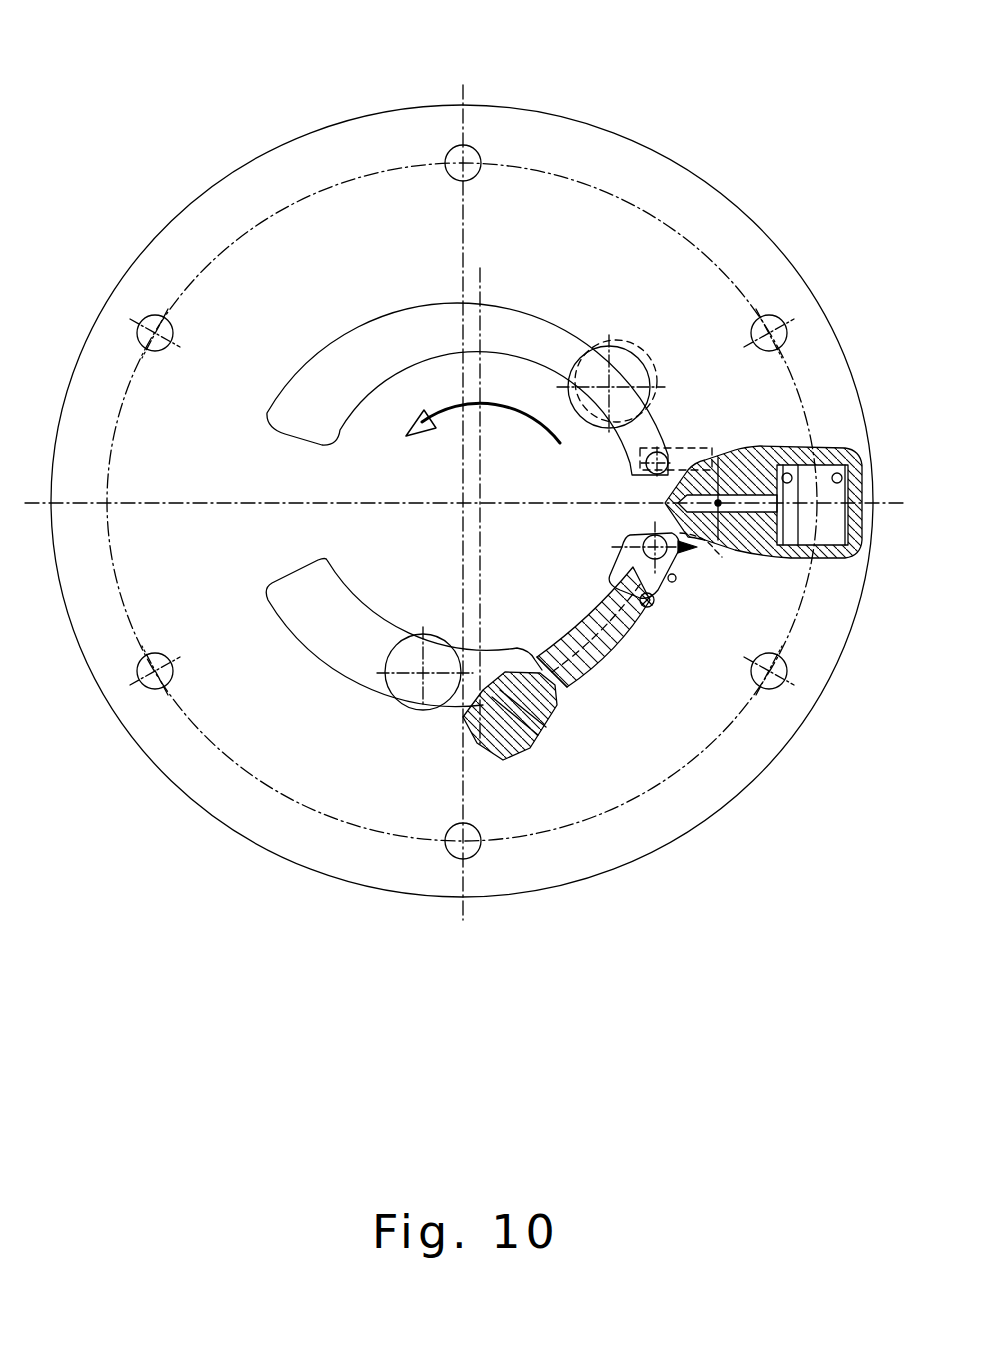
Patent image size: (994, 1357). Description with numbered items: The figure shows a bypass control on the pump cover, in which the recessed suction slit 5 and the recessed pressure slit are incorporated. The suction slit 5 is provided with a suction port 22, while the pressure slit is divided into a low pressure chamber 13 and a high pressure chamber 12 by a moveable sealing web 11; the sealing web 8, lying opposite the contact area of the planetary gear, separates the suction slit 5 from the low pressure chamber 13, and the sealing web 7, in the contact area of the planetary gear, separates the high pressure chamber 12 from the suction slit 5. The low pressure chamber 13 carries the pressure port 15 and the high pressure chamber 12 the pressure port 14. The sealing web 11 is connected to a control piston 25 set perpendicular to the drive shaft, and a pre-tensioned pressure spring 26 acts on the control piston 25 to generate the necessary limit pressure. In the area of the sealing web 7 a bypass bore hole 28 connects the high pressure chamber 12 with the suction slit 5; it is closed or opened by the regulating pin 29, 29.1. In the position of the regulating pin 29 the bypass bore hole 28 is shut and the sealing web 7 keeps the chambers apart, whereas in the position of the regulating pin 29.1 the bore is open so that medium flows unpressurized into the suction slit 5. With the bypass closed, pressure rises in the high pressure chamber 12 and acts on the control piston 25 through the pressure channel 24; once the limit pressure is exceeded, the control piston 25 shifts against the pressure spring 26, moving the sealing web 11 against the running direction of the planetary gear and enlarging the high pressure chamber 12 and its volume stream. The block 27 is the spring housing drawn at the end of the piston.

The suction slit 5 is at (345, 367).
The sealing web 7 is at (643, 490).
The sealing web 8 is at (272, 470).
The sealing web 11 is at (641, 798).
The high pressure chamber 12 is at (757, 724).
The low pressure chamber 13 is at (337, 615).
The pressure port 14 is at (672, 578).
The pressure port 15 is at (439, 682).
The suction port 22 is at (595, 363).
The pressure channel 24 is at (647, 600).
The control piston 25 is at (540, 688).
The pressure spring 26 is at (522, 722).
The clamp block 27 is at (529, 861).
The bypass bore hole 28 is at (713, 458).
The regulating pin 29 is at (776, 306).
The regulating pin 29.1 is at (837, 478).